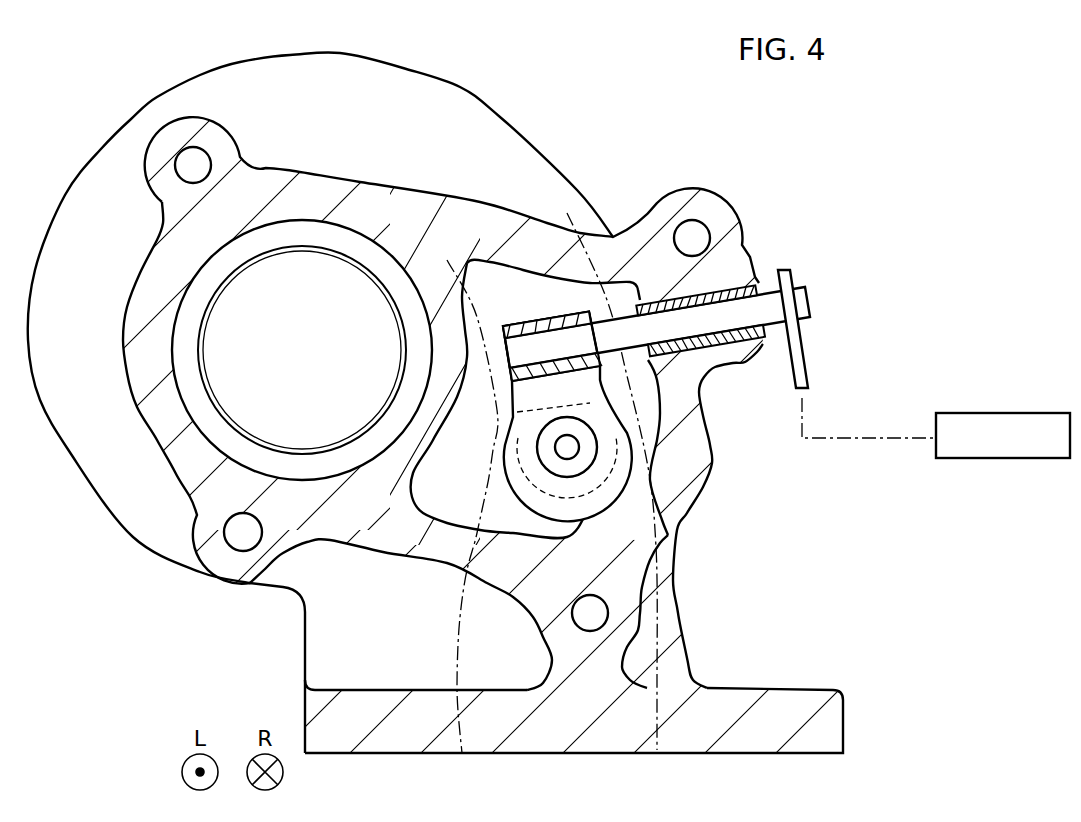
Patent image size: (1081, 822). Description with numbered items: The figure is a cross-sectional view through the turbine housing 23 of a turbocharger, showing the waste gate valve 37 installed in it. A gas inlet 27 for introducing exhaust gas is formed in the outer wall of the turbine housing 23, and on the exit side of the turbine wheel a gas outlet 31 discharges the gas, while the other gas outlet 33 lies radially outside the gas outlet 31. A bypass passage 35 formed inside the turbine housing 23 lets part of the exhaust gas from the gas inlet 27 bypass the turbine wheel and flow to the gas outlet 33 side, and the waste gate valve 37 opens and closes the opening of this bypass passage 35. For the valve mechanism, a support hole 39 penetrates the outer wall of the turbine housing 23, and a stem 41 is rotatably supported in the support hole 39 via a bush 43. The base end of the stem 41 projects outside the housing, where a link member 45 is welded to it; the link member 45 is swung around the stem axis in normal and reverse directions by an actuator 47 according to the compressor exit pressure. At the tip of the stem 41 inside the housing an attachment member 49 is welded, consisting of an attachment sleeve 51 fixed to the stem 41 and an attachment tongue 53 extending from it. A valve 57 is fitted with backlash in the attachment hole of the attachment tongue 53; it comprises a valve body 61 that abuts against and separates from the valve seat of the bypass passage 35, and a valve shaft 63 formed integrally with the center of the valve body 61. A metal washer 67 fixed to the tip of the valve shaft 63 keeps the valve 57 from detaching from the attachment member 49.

The turbine housing 23 is at (462, 86).
The gas inlet 27 is at (458, 617).
The gas outlet 31 is at (327, 275).
The other gas outlet 33 is at (523, 290).
The bypass passage 35 is at (593, 480).
The waste gate valve 37 is at (552, 316).
The support hole 39 is at (724, 292).
The stem 41 is at (651, 322).
The bush 43 is at (730, 345).
The link member 45 is at (806, 366).
The actuator 47 is at (990, 412).
The attachment member 49 is at (340, 322).
The attachment sleeve 51 is at (503, 330).
The attachment tongue 53 is at (517, 400).
The valve 57 is at (766, 455).
The valve body 61 is at (630, 445).
The valve shaft 63 is at (567, 447).
The metal washer 67 is at (551, 460).